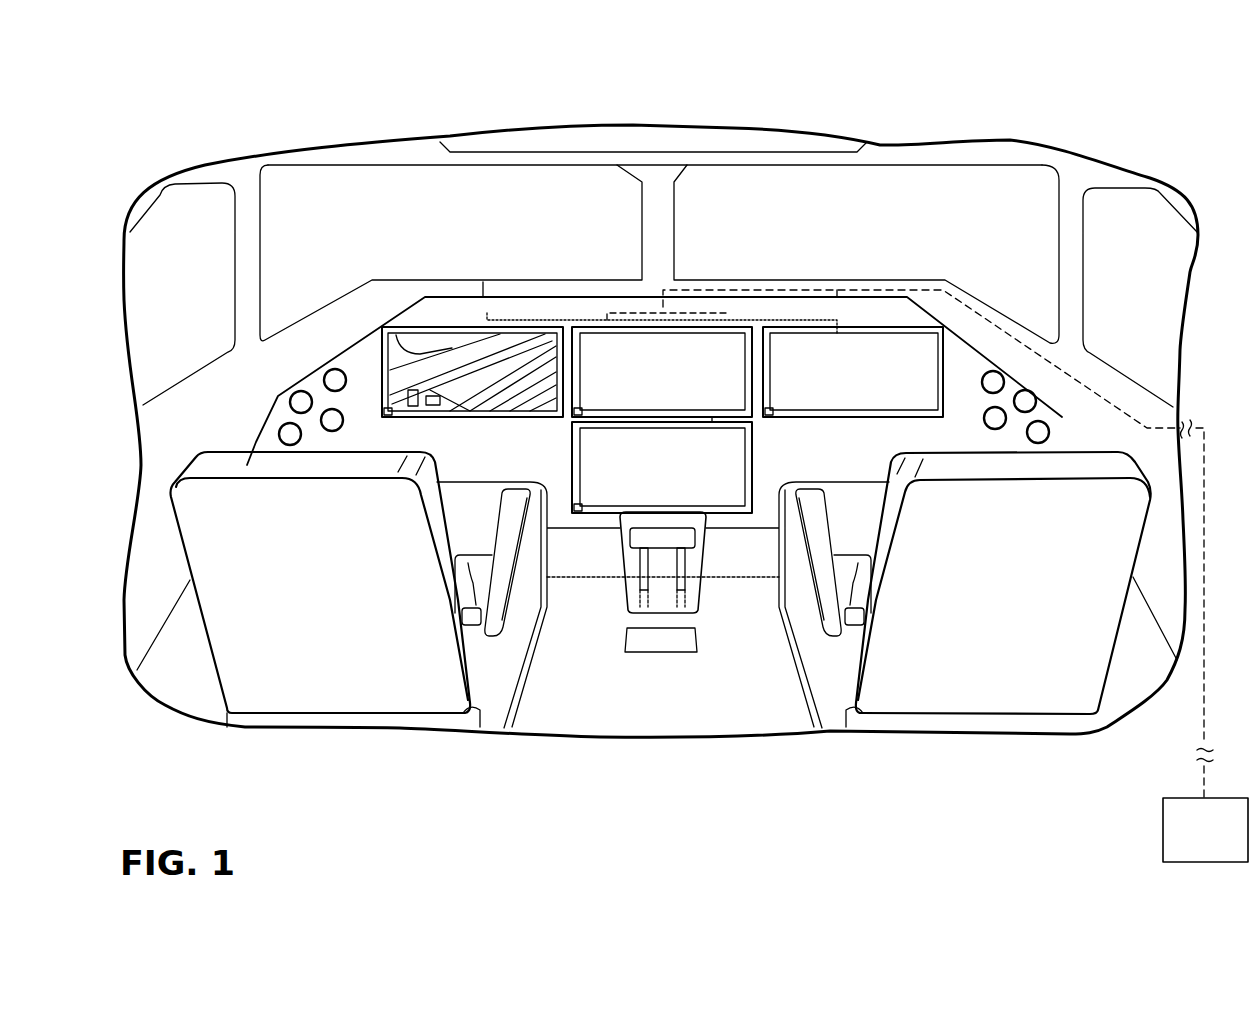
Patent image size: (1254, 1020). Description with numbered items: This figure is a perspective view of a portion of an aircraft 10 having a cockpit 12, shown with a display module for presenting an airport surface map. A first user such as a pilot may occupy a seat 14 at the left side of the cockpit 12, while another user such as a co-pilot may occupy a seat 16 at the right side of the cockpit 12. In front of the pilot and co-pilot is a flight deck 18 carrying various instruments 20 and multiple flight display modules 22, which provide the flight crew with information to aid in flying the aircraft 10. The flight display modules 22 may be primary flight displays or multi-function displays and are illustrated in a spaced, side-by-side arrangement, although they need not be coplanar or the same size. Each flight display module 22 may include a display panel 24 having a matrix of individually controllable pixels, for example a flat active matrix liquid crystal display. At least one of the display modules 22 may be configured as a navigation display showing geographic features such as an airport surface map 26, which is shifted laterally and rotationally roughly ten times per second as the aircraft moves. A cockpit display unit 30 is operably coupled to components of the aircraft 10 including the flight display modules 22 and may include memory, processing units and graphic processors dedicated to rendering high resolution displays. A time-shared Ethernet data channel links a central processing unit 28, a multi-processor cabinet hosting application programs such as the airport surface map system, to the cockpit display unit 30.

The aircraft 10 is at (230, 92).
The cockpit 12 is at (382, 140).
The seat 14 is at (270, 680).
The seat 16 is at (1042, 673).
The flight deck 18 is at (293, 378).
The instruments 20 is at (290, 436).
The flight display modules 22 is at (550, 333).
The display panel 24 is at (510, 330).
The airport surface map 26 is at (390, 357).
The central processing unit 28 is at (955, 576).
The cockpit display unit 30 is at (697, 320).